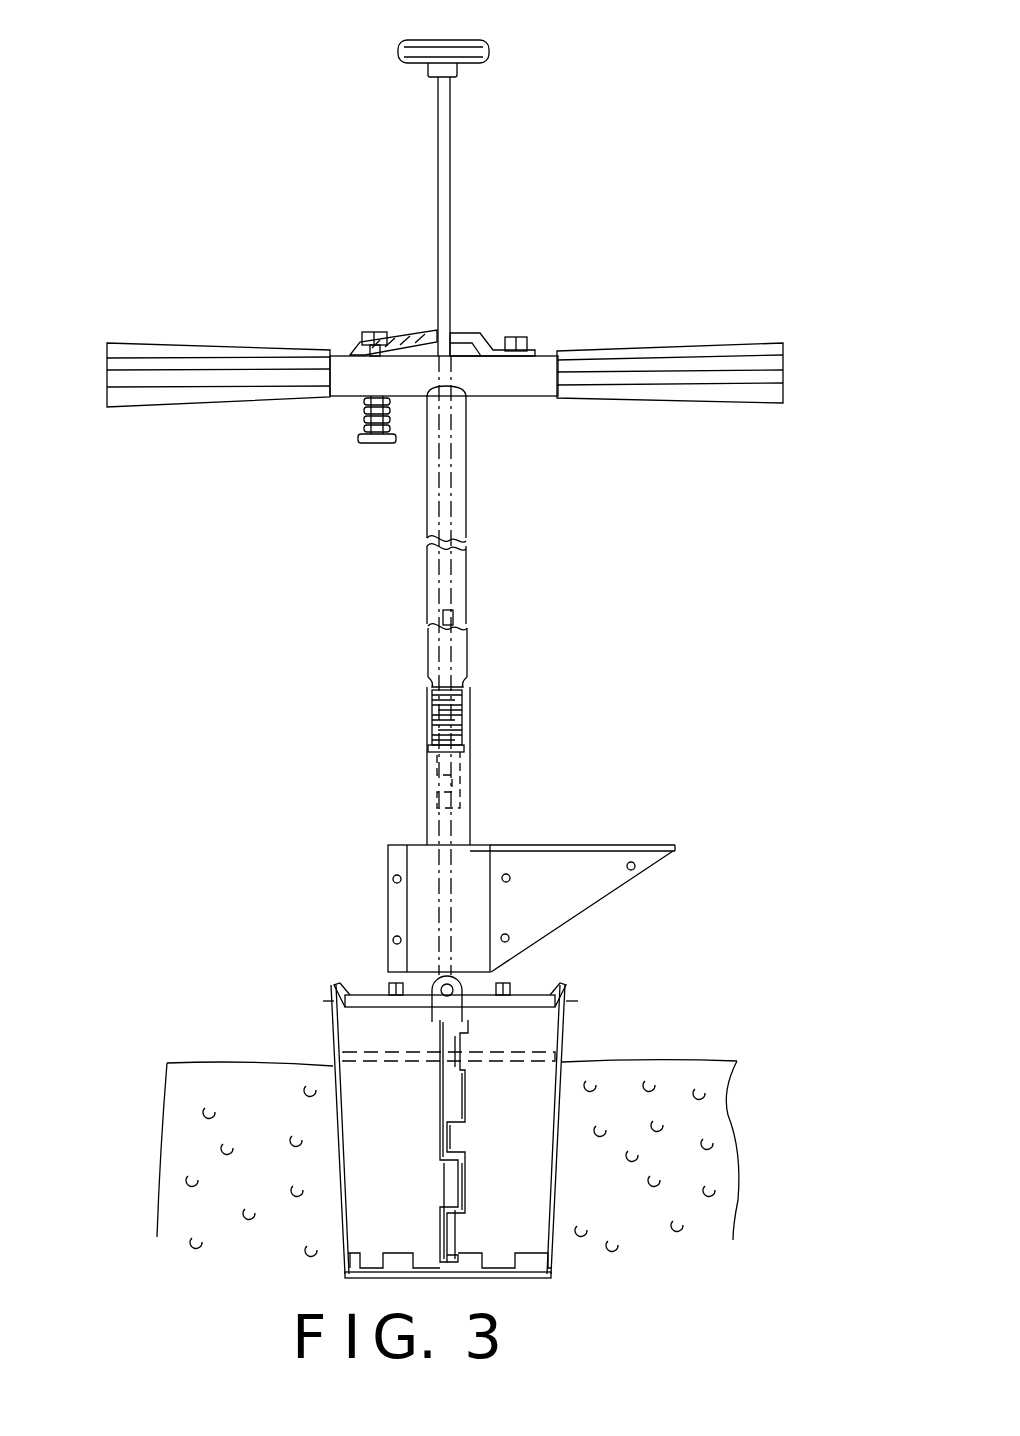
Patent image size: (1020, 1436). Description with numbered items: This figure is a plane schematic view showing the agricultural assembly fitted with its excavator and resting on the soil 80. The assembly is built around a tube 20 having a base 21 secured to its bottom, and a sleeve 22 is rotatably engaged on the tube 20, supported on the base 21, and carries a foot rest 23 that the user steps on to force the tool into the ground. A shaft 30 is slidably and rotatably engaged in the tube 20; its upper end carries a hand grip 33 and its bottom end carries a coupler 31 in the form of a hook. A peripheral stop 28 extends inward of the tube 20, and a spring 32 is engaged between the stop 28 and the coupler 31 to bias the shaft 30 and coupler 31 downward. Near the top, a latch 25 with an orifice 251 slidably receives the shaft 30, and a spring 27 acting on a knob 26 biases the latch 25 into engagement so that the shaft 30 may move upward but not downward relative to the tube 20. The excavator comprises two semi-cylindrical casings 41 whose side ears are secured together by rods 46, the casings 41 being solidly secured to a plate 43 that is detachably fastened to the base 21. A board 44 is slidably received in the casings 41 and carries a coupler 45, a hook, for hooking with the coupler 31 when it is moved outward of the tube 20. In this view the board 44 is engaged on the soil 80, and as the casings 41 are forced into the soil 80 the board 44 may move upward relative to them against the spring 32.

The tube 20 is at (470, 480).
The base 21 is at (397, 1008).
The sleeve 22 is at (423, 978).
The foot rest 23 is at (625, 858).
The latch 25 is at (405, 335).
The orifice 251 is at (482, 332).
The knob 26 is at (375, 445).
The spring 27 is at (362, 410).
The peripheral stop 28 is at (426, 682).
The shaft 30 is at (443, 612).
The coupler 31 is at (440, 757).
The spring 32 is at (462, 712).
The hand grip 33 is at (470, 42).
The casing 41 is at (348, 1140).
The plate 43 is at (540, 995).
The board 44 is at (553, 1050).
The coupler 45 is at (460, 818).
The rod 46 is at (468, 1257).
The soil 80 is at (702, 1170).